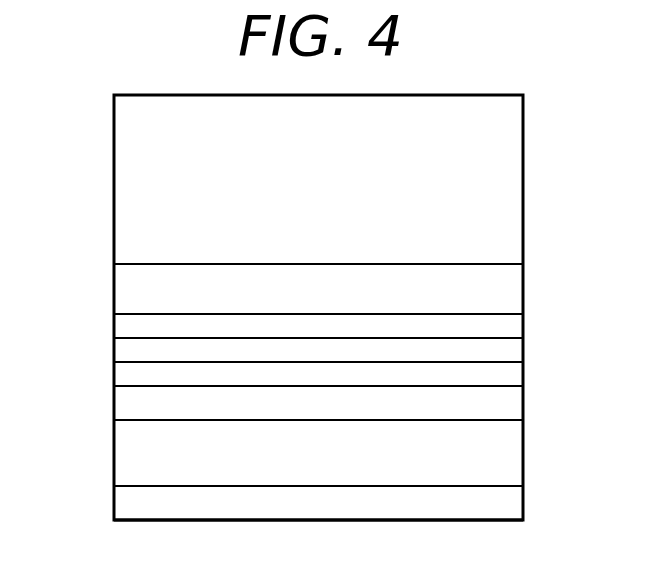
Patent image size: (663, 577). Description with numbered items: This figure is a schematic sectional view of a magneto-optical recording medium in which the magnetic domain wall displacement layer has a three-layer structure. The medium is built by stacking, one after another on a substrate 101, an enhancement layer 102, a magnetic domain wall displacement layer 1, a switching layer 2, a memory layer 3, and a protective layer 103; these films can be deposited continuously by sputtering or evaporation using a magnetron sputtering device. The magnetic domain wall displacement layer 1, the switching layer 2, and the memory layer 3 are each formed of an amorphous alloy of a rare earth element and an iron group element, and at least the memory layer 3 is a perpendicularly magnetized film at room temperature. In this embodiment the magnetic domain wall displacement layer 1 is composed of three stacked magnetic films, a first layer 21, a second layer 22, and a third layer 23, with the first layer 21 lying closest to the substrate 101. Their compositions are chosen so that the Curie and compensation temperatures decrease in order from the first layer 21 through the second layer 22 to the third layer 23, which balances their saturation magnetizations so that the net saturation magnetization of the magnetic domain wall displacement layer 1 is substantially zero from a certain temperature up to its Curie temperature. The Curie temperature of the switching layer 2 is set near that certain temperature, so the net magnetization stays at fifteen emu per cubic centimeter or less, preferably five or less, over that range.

The substrate 101 is at (508, 187).
The enhancement layer 102 is at (508, 284).
The magnetic domain wall displacement layer 1 is at (298, 352).
The first layer 21 is at (122, 323).
The second layer 22 is at (120, 347).
The third layer 23 is at (122, 372).
The switching layer 2 is at (512, 407).
The memory layer 3 is at (510, 452).
The protective layer 103 is at (510, 499).